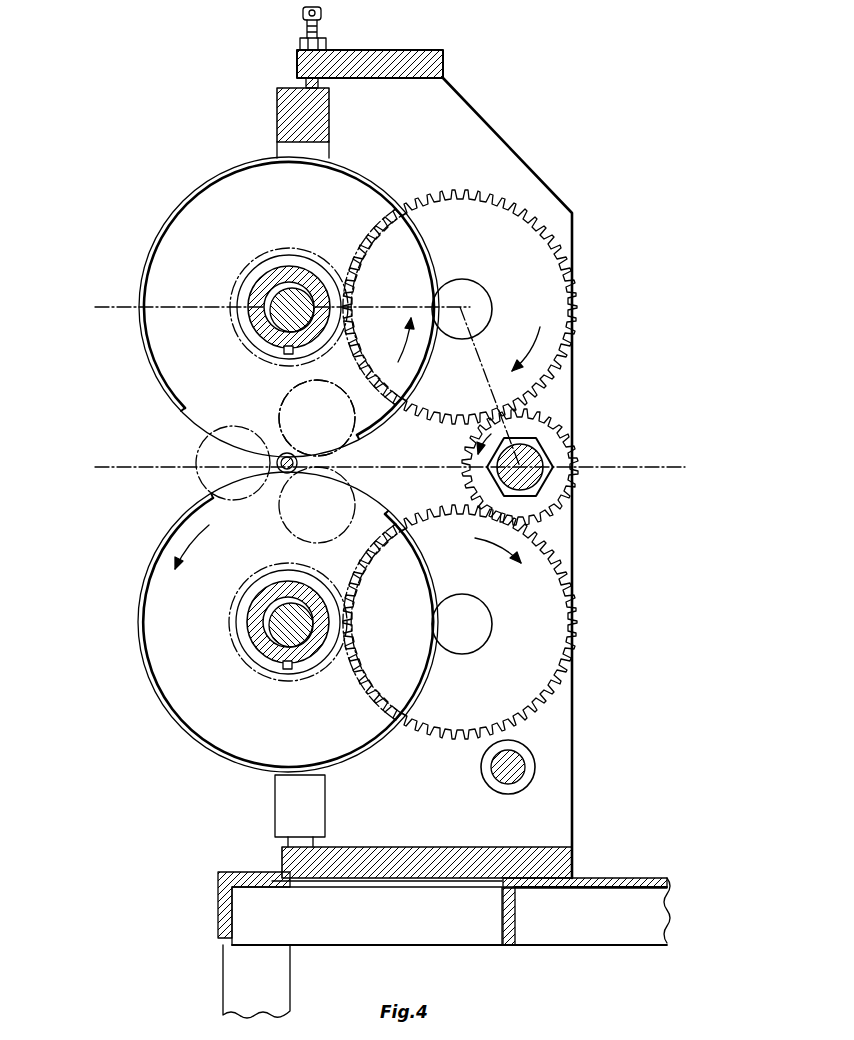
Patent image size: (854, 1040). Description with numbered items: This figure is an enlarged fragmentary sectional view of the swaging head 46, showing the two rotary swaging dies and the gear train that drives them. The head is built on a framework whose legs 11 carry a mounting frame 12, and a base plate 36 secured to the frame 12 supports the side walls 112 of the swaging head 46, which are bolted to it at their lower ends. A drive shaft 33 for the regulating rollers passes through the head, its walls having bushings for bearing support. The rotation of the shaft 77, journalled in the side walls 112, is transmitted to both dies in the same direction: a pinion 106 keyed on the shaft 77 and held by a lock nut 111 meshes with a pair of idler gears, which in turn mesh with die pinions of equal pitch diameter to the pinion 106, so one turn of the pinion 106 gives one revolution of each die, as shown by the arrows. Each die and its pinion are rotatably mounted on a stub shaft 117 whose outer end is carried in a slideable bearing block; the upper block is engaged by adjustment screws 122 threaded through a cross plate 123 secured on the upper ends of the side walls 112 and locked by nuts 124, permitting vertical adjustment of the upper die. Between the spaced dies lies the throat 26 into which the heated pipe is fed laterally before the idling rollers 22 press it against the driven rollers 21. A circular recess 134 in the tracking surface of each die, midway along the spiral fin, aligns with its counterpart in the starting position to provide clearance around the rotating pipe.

The legs 11 is at (235, 990).
The mounting frame 12 is at (232, 915).
The driven roller 21 is at (330, 398).
The idling roller 22 is at (230, 428).
The throat 26 is at (235, 463).
The drive shaft 33 is at (522, 778).
The base plate 36 is at (292, 857).
The swaging head 46 is at (514, 474).
The shaft 77 is at (530, 455).
The pinion 106 is at (553, 464).
The lock nut 111 is at (560, 492).
The side wall 112 is at (528, 170).
The stub shaft 117 is at (285, 297).
The adjustment screw 122 is at (303, 14).
The cross plate 123 is at (432, 60).
The nut 124 is at (326, 44).
The circular recess 134 is at (300, 452).